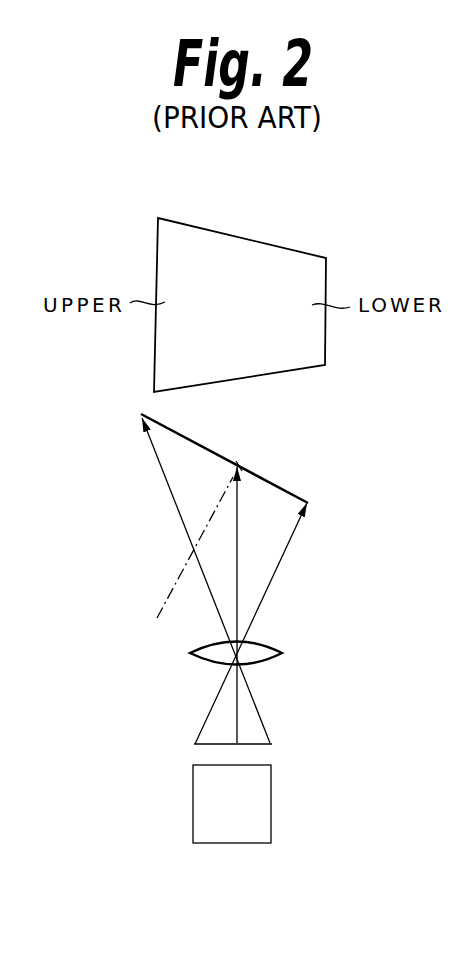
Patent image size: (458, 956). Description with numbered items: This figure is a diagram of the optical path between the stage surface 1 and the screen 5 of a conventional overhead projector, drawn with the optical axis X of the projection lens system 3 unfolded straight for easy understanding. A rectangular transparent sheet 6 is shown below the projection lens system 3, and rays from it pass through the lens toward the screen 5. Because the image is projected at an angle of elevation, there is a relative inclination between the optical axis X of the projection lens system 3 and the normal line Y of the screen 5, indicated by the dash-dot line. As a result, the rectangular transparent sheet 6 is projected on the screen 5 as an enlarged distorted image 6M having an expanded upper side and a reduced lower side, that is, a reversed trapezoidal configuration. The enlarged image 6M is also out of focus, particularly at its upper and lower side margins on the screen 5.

The enlarged distorted image 6M is at (313, 252).
The screen 5 is at (302, 497).
The optical axis X is at (238, 503).
The normal line Y is at (175, 580).
The projection lens system 3 is at (277, 645).
The stage surface 1 is at (270, 745).
The transparent sheet 6 is at (272, 805).